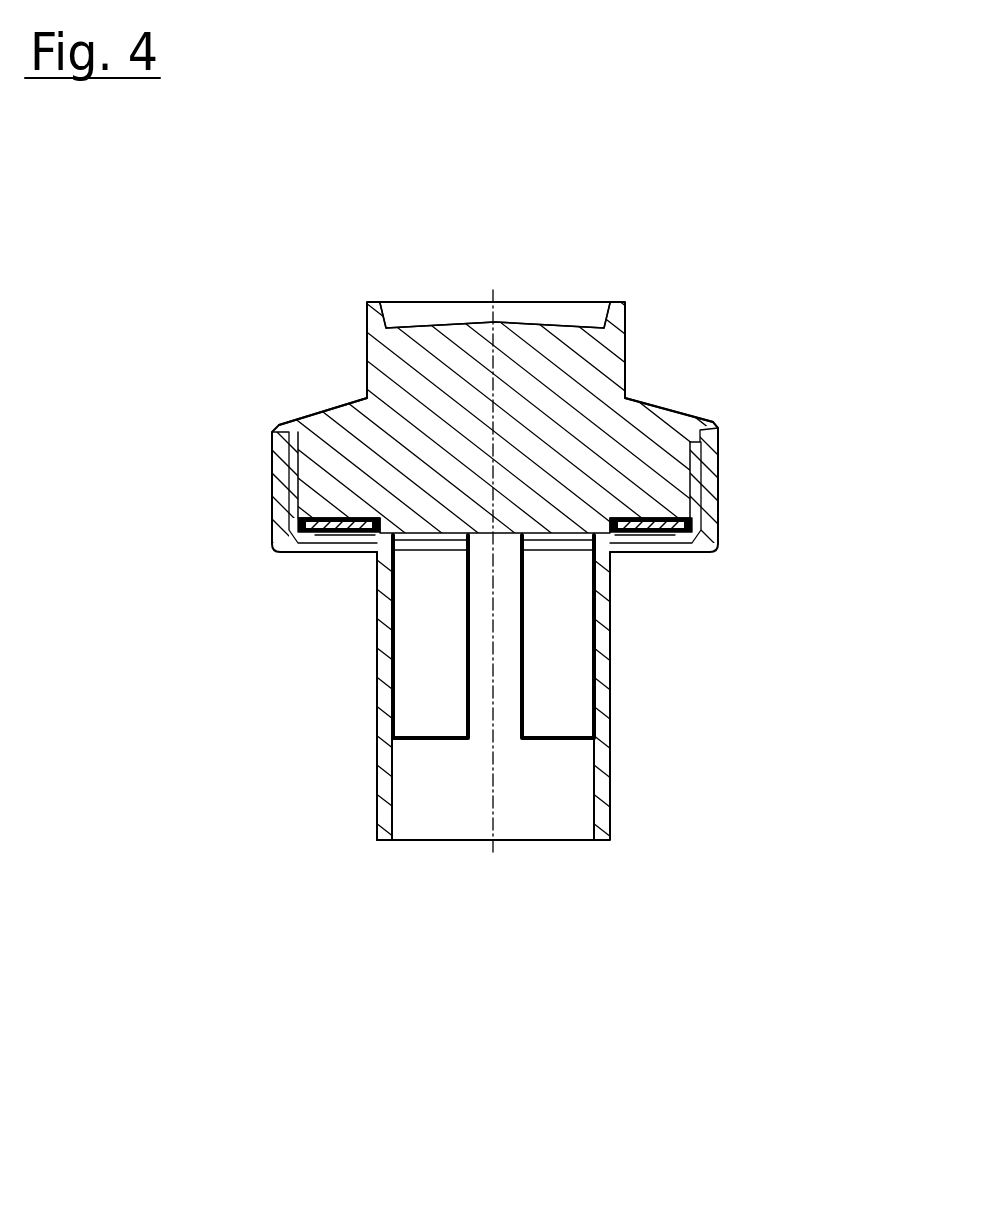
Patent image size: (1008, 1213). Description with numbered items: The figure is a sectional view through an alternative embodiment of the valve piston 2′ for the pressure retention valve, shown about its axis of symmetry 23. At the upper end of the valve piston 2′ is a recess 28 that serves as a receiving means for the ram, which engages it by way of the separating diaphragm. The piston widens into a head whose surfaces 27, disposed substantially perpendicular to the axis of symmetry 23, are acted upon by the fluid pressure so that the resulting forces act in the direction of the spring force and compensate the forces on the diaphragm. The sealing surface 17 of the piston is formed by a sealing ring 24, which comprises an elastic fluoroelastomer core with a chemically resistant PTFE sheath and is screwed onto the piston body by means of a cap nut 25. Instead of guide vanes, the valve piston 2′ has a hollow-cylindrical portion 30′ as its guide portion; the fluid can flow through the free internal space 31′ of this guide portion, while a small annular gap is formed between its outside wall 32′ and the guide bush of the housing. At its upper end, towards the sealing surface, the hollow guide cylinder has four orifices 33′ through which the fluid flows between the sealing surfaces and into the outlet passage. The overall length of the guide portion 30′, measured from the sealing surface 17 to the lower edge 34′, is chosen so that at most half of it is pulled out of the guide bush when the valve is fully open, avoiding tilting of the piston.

The valve piston 2′ is at (672, 266).
The sealing surface 17 is at (640, 540).
The axis of symmetry 23 is at (493, 292).
The sealing ring 24 is at (660, 523).
The cap nut 25 is at (706, 485).
The surfaces of the valve piston 27 is at (300, 403).
The recess 28 is at (406, 320).
The hollow-cylindrical portion 30′ is at (632, 757).
The free internal space 31′ is at (540, 785).
The outside wall 32′ is at (610, 817).
The orifices 33′ is at (570, 677).
The lower edge 34′ is at (377, 848).